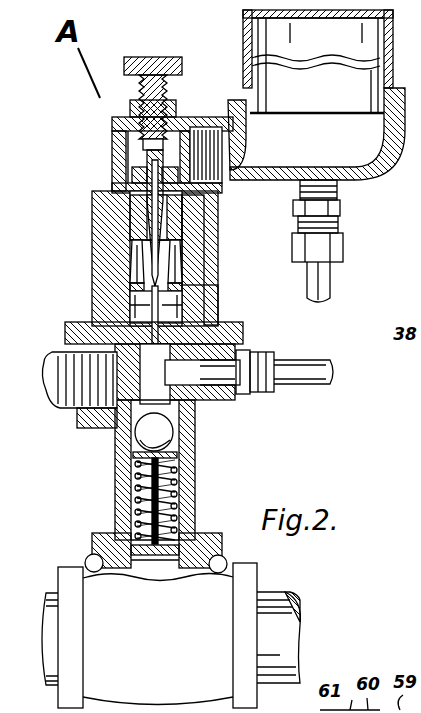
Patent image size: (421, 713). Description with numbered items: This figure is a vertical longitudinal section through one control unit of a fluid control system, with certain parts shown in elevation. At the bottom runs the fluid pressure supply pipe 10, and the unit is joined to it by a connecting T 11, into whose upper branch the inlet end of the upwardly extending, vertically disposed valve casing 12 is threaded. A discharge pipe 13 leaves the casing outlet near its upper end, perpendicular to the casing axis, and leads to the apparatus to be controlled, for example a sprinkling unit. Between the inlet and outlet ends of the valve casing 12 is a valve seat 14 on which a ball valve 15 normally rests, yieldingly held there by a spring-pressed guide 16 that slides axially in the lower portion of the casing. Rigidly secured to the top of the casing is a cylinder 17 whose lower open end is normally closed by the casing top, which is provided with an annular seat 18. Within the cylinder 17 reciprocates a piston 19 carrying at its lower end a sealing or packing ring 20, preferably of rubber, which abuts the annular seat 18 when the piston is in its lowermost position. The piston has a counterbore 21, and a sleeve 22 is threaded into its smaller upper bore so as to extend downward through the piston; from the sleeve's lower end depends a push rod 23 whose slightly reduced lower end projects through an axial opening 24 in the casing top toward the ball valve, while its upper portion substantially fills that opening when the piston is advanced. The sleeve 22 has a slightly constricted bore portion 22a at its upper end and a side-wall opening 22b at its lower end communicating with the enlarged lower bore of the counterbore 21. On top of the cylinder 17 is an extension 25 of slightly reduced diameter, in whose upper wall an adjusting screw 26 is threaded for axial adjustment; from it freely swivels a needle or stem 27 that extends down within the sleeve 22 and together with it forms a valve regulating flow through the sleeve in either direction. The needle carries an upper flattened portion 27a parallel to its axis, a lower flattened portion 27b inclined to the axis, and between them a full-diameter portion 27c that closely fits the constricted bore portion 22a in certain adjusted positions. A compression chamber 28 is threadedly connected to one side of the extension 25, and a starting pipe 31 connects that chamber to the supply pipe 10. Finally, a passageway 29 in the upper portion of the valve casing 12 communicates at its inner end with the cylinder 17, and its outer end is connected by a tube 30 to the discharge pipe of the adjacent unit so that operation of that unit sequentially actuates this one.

The fluid pressure supply pipe 10 is at (270, 600).
The connecting T 11 is at (149, 620).
The valve casing 12 is at (196, 480).
The discharge pipe 13 is at (72, 410).
The valve seat 14 is at (168, 420).
The ball valve 15 is at (172, 444).
The spring-pressed guide 16 is at (140, 505).
The cylinder 17 is at (205, 262).
The annular seat 18 is at (212, 312).
The piston 19 is at (218, 215).
The sealing or packing ring 20 is at (130, 298).
The counterbore 21 is at (200, 247).
The sleeve 22 is at (182, 280).
The constricted bore portion 22a is at (132, 175).
The opening 22b is at (132, 268).
The push rod 23 is at (130, 306).
The axial opening 24 is at (120, 345).
The extension 25 is at (112, 140).
The adjusting screw 26 is at (158, 60).
The needle or stem 27 is at (218, 150).
The upper flattened portion 27a is at (115, 187).
The lower flattened portion 27b is at (132, 240).
The full-diameter portion 27c is at (112, 212).
The compression chamber 28 is at (316, 95).
The passageway 29 is at (240, 342).
The tube 30 is at (328, 374).
The starting pipe 31 is at (336, 285).